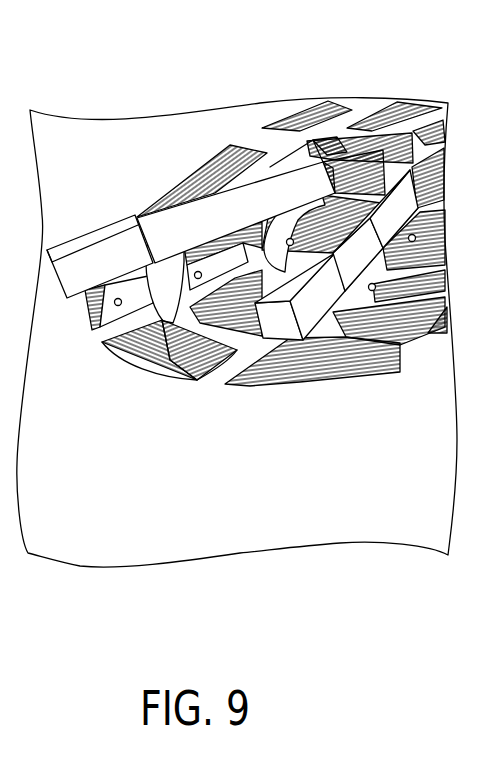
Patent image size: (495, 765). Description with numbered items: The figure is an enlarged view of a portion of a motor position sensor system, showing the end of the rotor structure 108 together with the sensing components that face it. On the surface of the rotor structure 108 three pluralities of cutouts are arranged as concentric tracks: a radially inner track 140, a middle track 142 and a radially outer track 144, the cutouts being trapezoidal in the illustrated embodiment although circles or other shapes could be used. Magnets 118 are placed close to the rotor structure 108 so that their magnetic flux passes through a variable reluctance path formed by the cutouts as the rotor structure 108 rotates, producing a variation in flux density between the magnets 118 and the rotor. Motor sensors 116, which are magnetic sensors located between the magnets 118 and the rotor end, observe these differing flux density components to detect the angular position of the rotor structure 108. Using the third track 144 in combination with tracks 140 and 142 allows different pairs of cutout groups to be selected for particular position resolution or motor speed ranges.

The rotor structure 108 is at (130, 140).
The motor sensors 116 is at (401, 339).
The magnets 118 is at (204, 213).
The radially inner track 140 is at (446, 108).
The middle track 142 is at (387, 112).
The radially outer track 144 is at (307, 103).